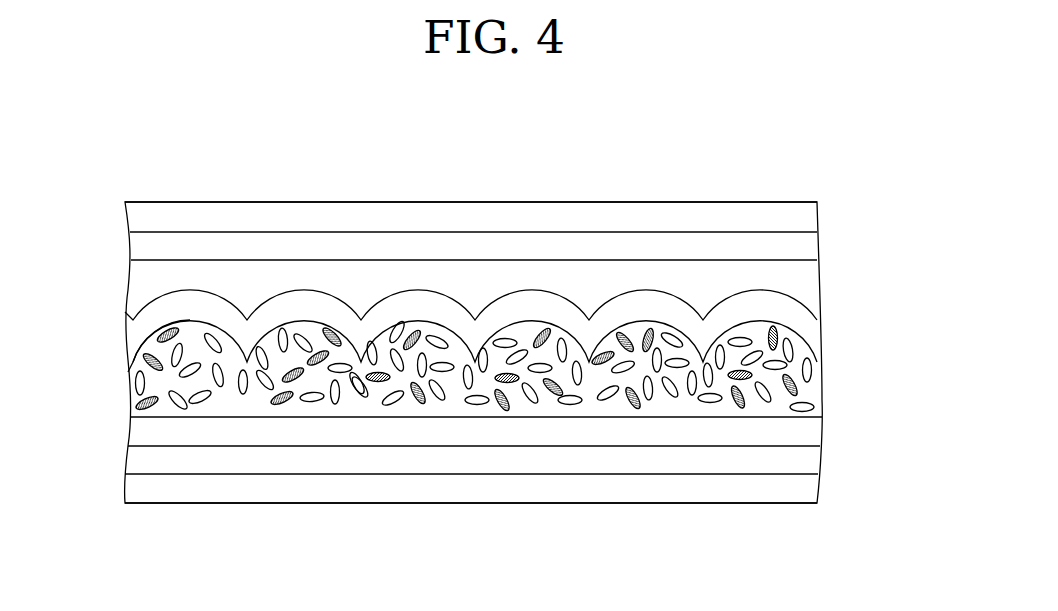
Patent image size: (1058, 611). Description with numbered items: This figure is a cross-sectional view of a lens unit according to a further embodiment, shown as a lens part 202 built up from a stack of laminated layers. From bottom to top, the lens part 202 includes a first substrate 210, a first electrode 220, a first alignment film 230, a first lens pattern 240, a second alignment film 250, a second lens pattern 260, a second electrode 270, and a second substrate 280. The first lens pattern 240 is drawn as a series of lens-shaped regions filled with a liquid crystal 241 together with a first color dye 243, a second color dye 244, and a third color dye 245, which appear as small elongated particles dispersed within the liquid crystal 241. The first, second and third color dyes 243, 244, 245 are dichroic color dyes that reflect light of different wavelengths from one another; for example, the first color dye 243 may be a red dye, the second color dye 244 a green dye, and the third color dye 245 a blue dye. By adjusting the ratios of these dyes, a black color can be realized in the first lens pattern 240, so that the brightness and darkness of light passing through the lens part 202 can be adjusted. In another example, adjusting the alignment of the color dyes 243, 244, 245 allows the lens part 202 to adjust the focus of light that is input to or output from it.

The lens part 202 is at (863, 123).
The first substrate 210 is at (810, 487).
The first electrode 220 is at (810, 458).
The first alignment film 230 is at (808, 428).
The first lens pattern 240 is at (546, 368).
The liquid crystal 241 is at (801, 380).
The first color dye 243 is at (797, 333).
The second color dye 244 is at (812, 360).
The third color dye 245 is at (815, 363).
The second alignment film 250 is at (788, 315).
The second lens pattern 260 is at (808, 280).
The second electrode 270 is at (808, 243).
The second substrate 280 is at (808, 216).